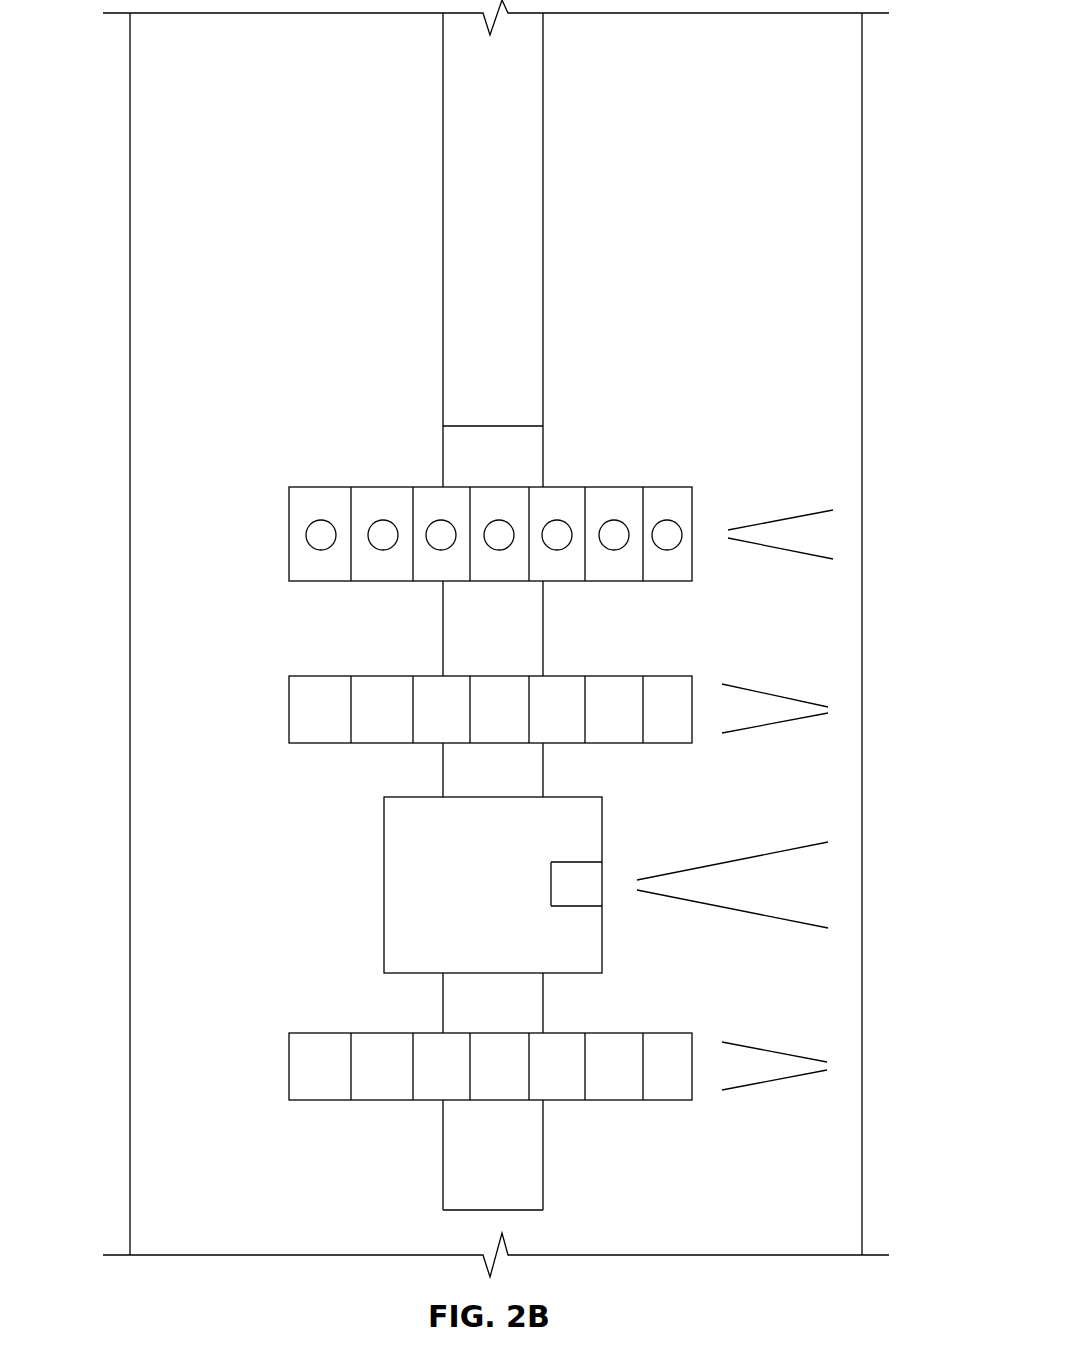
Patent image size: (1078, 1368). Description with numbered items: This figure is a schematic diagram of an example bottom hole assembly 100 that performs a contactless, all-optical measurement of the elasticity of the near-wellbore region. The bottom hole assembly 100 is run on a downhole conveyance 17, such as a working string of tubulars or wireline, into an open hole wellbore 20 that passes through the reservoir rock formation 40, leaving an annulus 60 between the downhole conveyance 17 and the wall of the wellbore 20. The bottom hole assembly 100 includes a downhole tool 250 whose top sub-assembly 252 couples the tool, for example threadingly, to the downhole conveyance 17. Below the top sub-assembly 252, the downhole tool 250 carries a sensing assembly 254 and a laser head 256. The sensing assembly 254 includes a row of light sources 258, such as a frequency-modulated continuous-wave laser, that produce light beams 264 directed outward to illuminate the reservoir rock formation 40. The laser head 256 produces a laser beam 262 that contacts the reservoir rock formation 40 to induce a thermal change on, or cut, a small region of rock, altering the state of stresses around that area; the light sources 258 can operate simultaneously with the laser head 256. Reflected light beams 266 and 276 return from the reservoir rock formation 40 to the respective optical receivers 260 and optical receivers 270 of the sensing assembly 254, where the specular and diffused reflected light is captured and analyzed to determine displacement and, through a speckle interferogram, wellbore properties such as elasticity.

The downhole conveyance 17 is at (543, 160).
The wellbore 20 is at (851, 437).
The reservoir rock formation 40 is at (948, 542).
The annulus 60 is at (838, 225).
The bottom hole assembly 100 is at (173, 788).
The downhole tool 250 is at (270, 902).
The top sub-assembly 252 is at (463, 465).
The sensing assembly 254 is at (203, 662).
The laser head 256 is at (398, 934).
The light sources 258 is at (563, 487).
The optical receivers 260 is at (667, 693).
The laser beam 262 is at (748, 898).
The light beams 264 is at (788, 537).
The reflected light beams 266 is at (762, 710).
The optical receivers 270 is at (563, 1085).
The reflected light beams 276 is at (765, 1072).